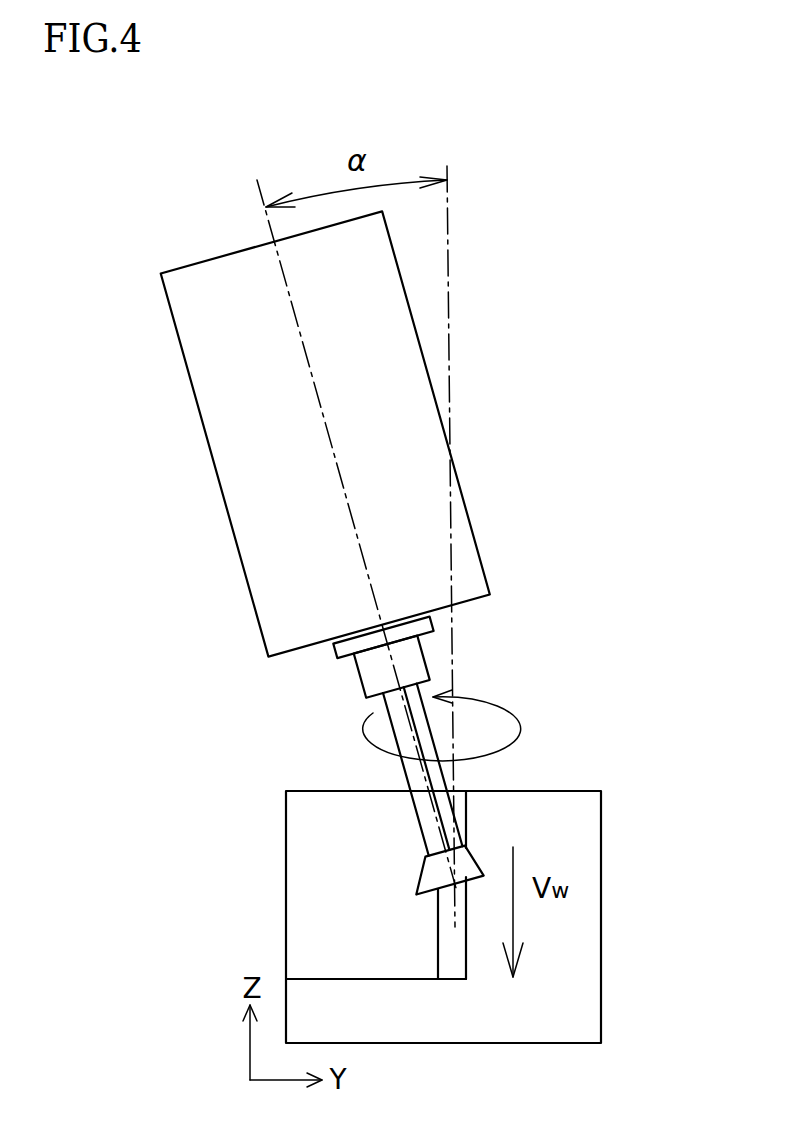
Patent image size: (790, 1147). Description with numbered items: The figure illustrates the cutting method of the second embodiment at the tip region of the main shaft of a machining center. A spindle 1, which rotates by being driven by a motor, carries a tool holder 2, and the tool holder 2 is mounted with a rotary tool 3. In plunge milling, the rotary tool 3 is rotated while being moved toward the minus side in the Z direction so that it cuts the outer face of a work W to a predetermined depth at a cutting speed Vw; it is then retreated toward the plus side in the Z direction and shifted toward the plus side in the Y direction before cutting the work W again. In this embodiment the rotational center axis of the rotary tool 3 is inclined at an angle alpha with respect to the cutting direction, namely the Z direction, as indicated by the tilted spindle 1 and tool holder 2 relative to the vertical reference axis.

The spindle 1 is at (228, 440).
The tool holder 2 is at (378, 673).
The rotary tool 3 is at (470, 872).
The work W is at (585, 948).